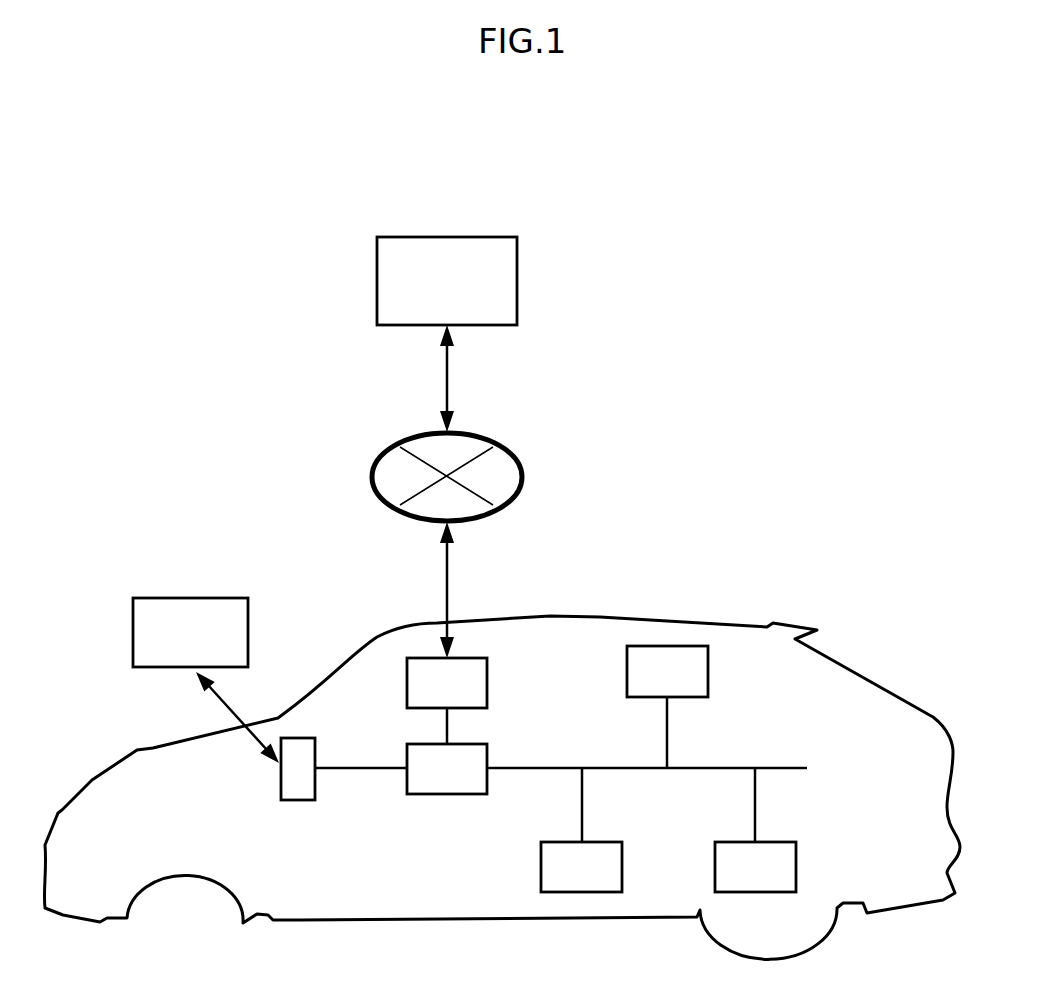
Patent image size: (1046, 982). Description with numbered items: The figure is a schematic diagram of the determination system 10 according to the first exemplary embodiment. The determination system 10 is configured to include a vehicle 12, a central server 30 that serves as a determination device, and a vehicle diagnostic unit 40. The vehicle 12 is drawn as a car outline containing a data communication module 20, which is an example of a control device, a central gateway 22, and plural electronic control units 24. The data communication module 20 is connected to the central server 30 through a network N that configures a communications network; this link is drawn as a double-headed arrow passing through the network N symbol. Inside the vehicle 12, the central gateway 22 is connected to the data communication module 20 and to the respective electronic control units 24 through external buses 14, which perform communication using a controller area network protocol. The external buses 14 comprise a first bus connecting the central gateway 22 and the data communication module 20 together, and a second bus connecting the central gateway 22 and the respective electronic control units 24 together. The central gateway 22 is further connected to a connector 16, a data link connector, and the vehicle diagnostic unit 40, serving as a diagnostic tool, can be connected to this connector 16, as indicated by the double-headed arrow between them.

The determination system 10 is at (818, 240).
The vehicle 12 is at (730, 623).
The external buses 14 is at (447, 725).
The connector 16 is at (295, 800).
The data communication module 20 is at (487, 680).
The central gateway 22 is at (447, 794).
The electronic control units 24 is at (708, 672).
The central server 30 is at (487, 237).
The vehicle diagnostic unit 40 is at (215, 598).
The network N is at (523, 475).